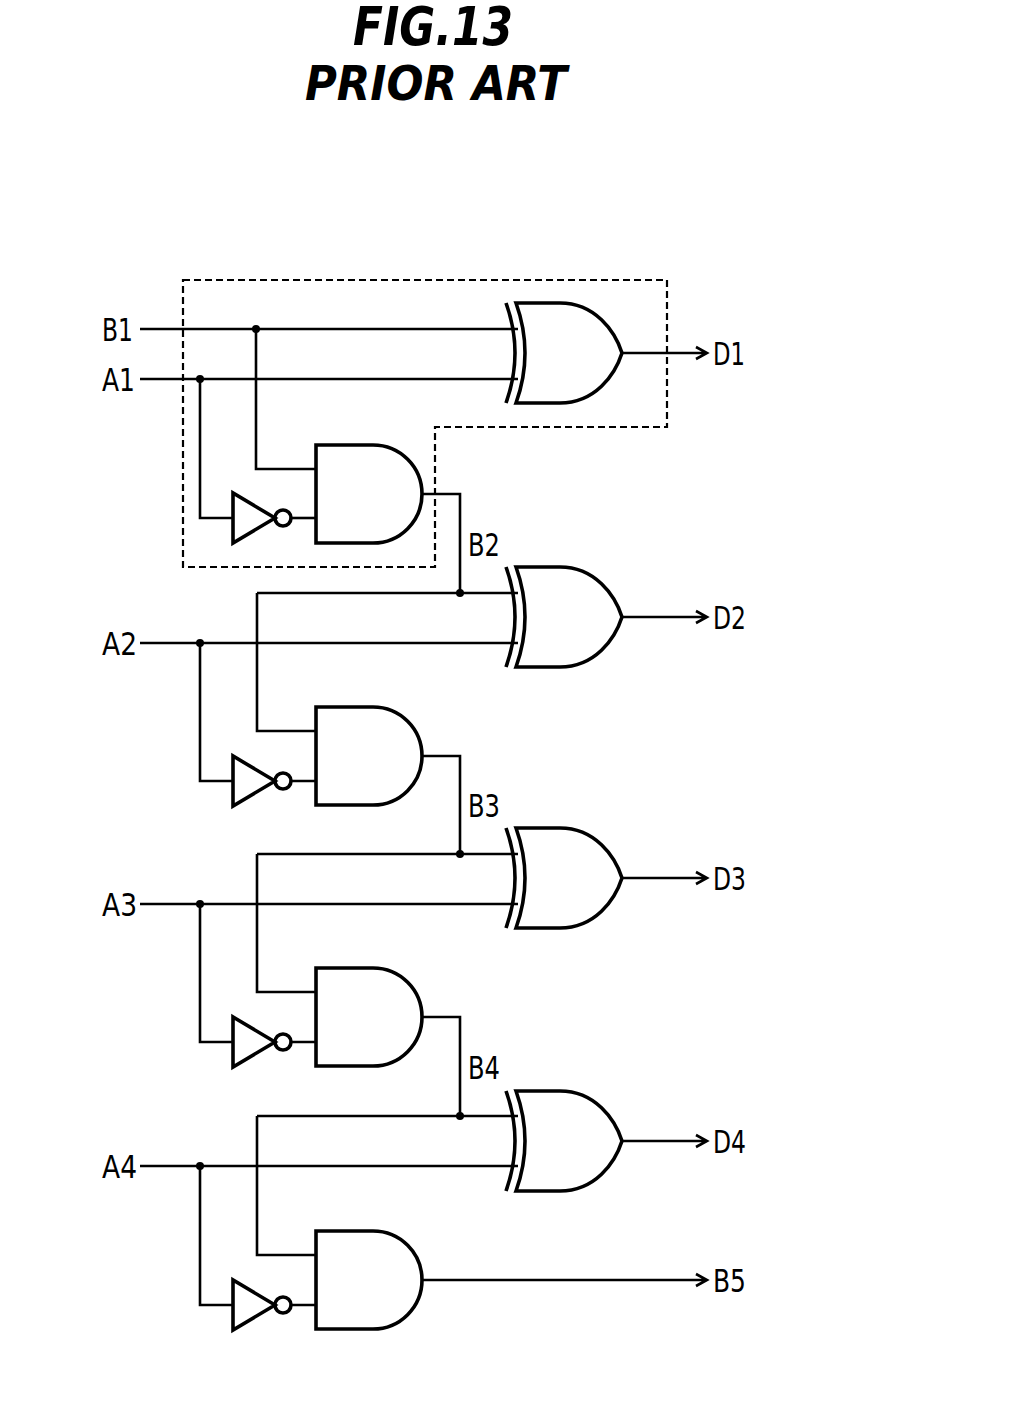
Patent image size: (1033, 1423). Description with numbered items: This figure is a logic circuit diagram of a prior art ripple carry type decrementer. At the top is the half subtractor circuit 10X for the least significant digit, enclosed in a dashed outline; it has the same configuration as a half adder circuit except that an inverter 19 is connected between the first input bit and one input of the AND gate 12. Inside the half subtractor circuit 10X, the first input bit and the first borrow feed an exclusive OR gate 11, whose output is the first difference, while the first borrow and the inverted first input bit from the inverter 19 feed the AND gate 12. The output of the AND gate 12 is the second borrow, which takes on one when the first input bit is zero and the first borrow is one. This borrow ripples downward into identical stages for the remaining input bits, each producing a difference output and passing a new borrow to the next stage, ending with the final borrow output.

The half subtractor circuit 10X is at (415, 280).
The exclusive OR gate 11 is at (582, 304).
The AND gate 12 is at (378, 445).
The inverter 19 is at (233, 500).